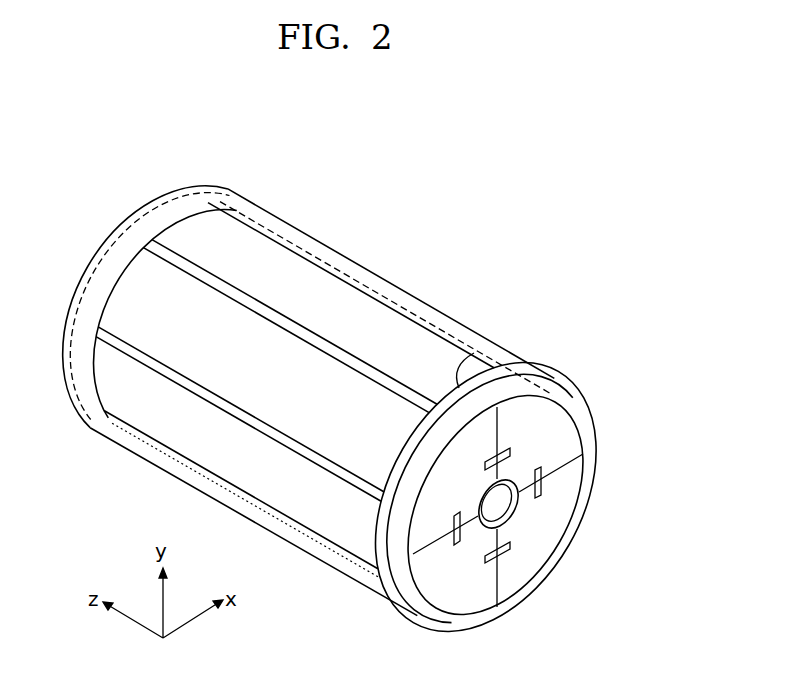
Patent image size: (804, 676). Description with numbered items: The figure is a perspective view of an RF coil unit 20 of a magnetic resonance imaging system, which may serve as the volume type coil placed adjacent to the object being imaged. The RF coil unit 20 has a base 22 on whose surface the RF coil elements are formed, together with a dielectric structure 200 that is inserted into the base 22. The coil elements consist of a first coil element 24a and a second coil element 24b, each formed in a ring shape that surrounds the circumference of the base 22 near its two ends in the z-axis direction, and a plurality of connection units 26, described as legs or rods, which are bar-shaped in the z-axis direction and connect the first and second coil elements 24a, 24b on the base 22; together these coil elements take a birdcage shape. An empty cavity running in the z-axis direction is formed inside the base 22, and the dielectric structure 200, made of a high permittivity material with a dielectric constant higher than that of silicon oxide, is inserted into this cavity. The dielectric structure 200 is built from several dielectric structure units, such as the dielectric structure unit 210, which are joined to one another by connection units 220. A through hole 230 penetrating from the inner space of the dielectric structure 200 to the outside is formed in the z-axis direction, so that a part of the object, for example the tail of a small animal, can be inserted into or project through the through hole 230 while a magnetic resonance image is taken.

The RF coil unit 20 is at (574, 197).
The base 22 is at (581, 405).
The first coil element 24a is at (127, 268).
The second coil element 24b is at (473, 358).
The connection units 26 is at (288, 321).
The dielectric structure 200 is at (459, 331).
The dielectric structure unit 210 is at (566, 440).
The connection units 220 is at (543, 495).
The through hole 230 is at (499, 506).